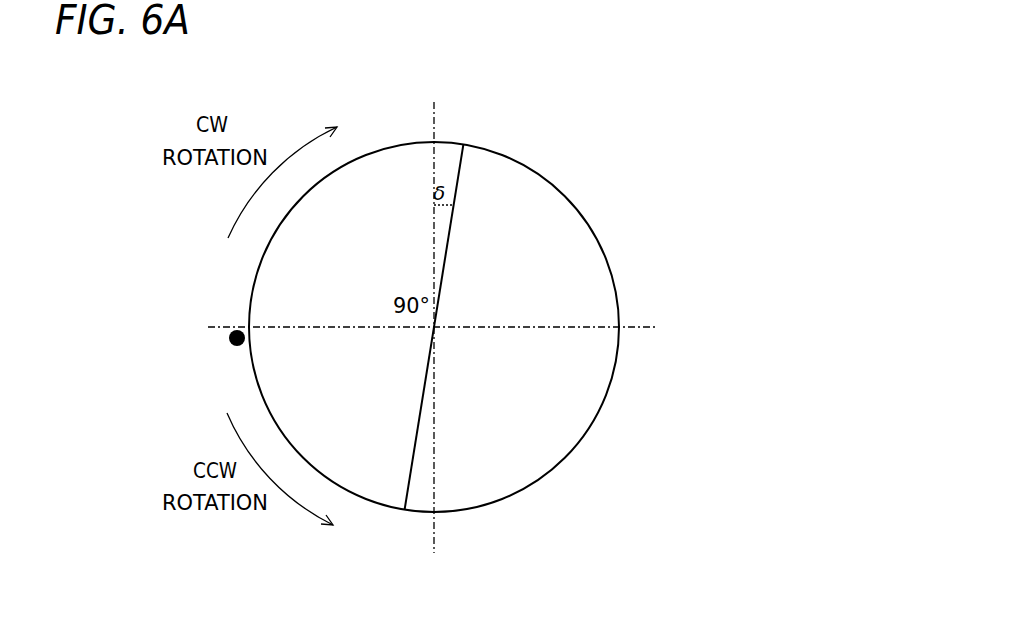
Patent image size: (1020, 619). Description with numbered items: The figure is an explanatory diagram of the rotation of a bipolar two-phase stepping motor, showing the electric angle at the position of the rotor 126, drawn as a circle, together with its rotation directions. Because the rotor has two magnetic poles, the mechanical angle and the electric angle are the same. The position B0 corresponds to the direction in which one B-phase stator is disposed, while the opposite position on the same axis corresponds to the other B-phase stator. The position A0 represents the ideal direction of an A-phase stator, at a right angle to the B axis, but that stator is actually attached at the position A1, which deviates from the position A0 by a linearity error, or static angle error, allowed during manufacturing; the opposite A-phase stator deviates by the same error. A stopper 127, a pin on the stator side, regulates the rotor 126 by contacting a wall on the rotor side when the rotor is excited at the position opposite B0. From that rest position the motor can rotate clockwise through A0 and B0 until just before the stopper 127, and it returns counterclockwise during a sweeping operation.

The rotor 126 is at (563, 192).
The stopper 127 is at (232, 345).
The position A0 is at (435, 329).
The position B0 is at (426, 327).
The position A1 is at (430, 330).